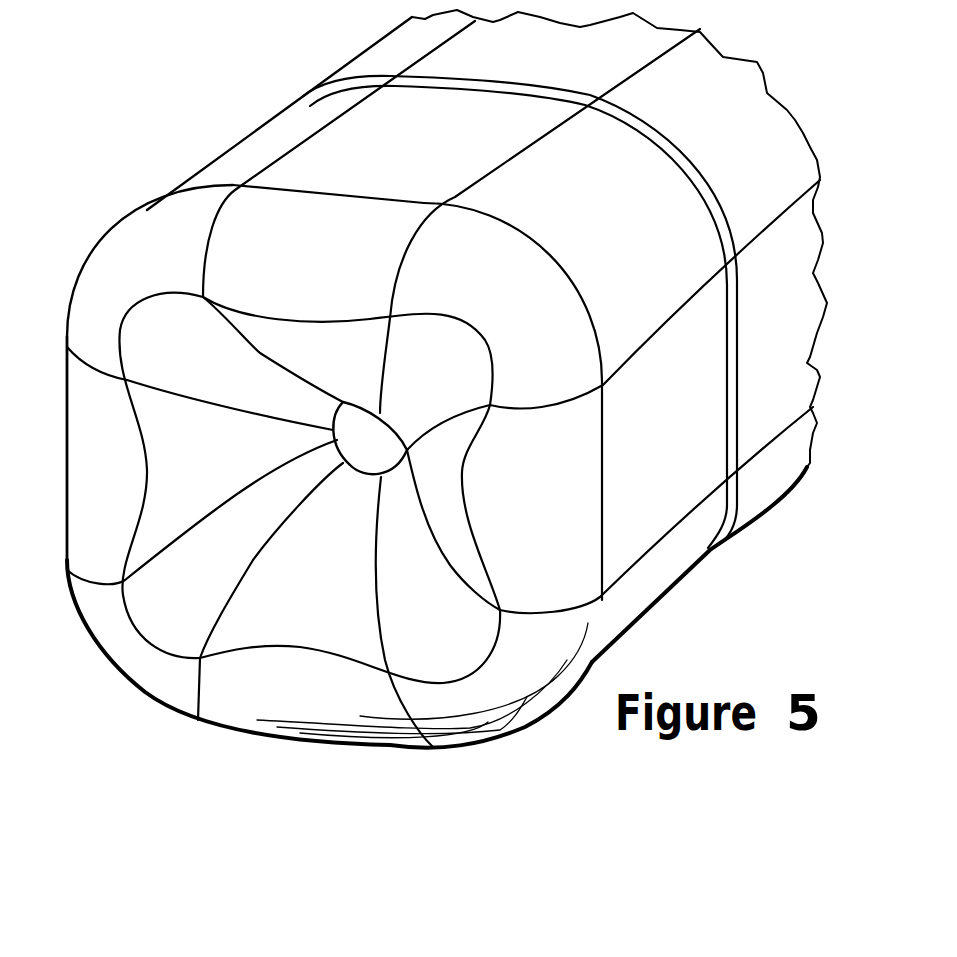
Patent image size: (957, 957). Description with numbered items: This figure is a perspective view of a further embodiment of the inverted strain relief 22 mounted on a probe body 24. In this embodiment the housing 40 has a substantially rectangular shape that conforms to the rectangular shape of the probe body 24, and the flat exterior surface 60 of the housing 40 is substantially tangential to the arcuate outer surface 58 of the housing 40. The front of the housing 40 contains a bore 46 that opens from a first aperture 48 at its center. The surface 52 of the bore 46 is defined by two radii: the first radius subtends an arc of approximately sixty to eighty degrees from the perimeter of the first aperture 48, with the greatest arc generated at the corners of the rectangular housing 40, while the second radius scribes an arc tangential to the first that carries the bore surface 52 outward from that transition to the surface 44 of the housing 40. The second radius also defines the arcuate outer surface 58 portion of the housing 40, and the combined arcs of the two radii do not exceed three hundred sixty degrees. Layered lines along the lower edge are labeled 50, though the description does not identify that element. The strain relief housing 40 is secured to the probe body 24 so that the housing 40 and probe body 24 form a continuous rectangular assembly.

The inverted strain relief 22 is at (222, 92).
The probe body 24 is at (777, 127).
The housing 40 is at (127, 687).
The surface of the housing 44 is at (197, 693).
The bore 46 is at (138, 608).
The first aperture 48 is at (363, 477).
The foam layers 50 is at (465, 703).
The bore surface 52 is at (225, 461).
The arcuate outer surface 58 is at (120, 247).
The flat exterior surface 60 is at (640, 623).